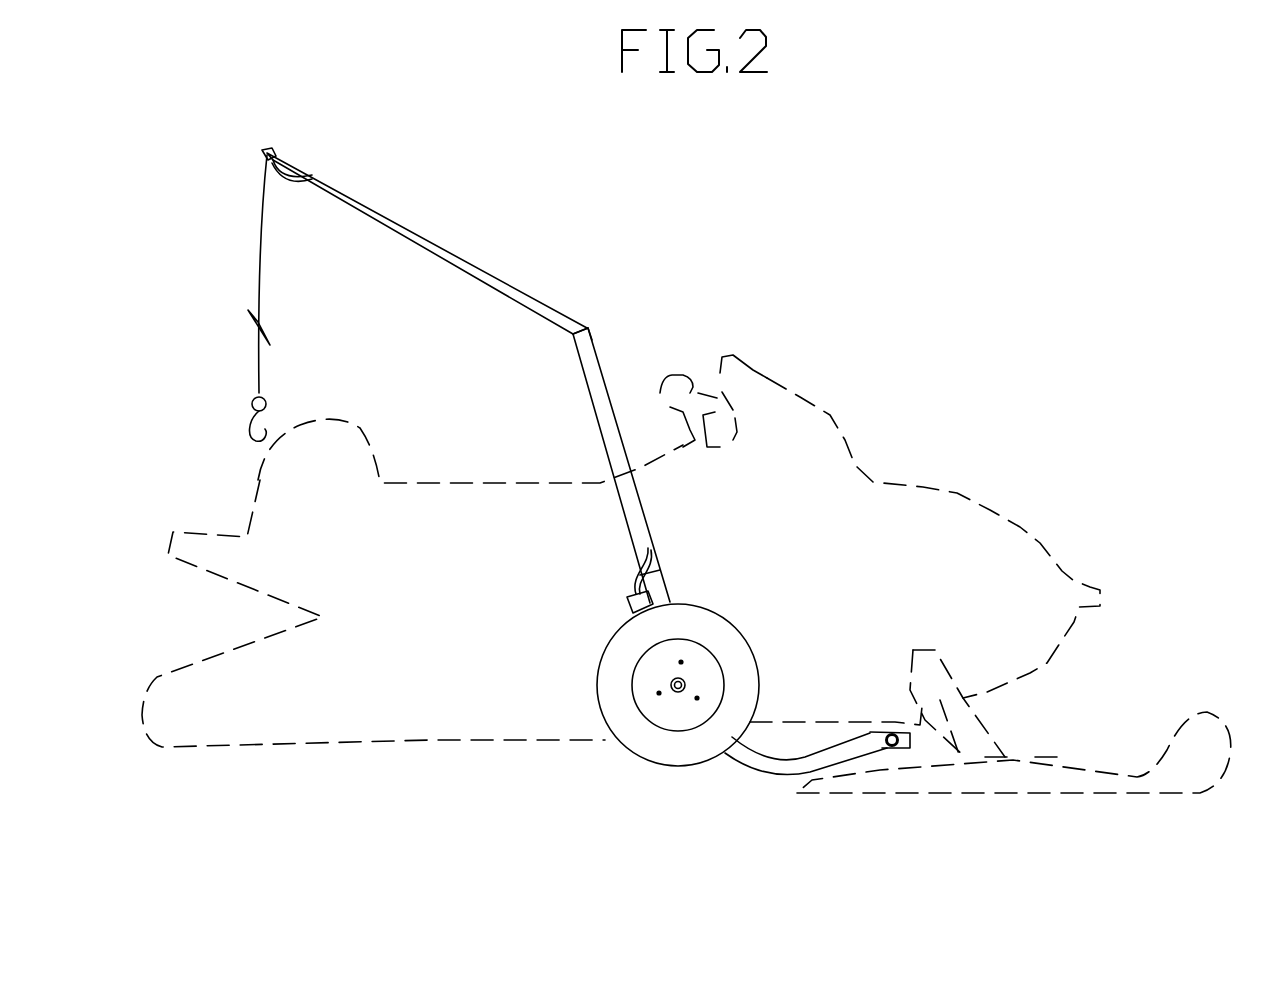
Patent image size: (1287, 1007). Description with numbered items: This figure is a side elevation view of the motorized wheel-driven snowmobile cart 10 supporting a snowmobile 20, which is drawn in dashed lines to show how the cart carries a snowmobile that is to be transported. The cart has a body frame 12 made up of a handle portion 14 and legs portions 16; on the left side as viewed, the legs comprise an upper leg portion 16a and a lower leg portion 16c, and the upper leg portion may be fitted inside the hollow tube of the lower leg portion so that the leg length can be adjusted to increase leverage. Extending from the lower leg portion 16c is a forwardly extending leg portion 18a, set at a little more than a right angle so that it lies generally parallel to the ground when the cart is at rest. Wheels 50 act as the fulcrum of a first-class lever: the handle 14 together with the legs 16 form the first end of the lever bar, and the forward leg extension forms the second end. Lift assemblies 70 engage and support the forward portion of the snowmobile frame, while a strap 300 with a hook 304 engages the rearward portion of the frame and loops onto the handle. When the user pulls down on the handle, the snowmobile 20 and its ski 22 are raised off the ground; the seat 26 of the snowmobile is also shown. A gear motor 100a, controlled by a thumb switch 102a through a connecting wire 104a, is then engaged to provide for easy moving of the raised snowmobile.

The motorized wheel-driven snowmobile cart 10 is at (461, 152).
The body frame 12 is at (515, 230).
The handle portion 14 is at (428, 282).
The legs portions 16 is at (568, 408).
The upper leg portion 16a is at (600, 350).
The lower leg portion 16c is at (668, 573).
The forwardly extending leg portion 18a is at (775, 768).
The snowmobile 20 is at (466, 600).
The ski 22 is at (1006, 787).
The seat 26 is at (375, 465).
The wheels 50 is at (748, 642).
The lift assemblies 70 is at (875, 731).
The gear motor 100a is at (624, 608).
The thumb switch 102a is at (267, 153).
The wire 104a is at (285, 185).
The strap 300 is at (258, 288).
The hook 304 is at (249, 422).